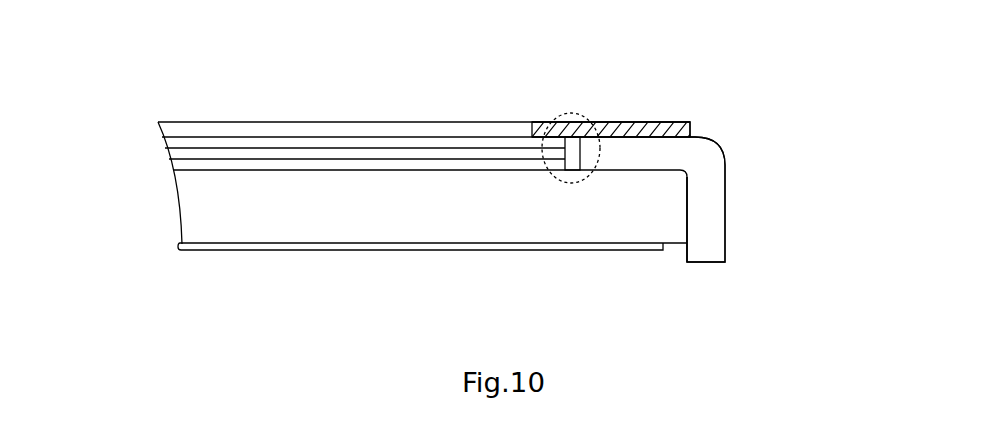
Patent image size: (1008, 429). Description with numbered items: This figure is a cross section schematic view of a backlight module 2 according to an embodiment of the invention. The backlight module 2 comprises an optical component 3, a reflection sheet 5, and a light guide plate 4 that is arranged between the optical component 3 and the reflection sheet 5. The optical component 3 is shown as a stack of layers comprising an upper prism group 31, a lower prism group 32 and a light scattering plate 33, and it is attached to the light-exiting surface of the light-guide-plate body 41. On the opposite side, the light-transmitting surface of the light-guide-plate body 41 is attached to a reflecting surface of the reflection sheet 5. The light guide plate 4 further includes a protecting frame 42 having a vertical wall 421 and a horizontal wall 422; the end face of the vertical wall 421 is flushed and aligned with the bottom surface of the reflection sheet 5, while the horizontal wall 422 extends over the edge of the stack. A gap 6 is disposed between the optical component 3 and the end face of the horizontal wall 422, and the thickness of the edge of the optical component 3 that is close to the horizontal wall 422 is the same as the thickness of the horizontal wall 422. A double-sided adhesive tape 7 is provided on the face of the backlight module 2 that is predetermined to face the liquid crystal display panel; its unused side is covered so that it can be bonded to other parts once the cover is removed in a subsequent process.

The backlight module 2 is at (446, 96).
The optical component 3 is at (80, 120).
The upper prism group 31 is at (158, 137).
The lower prism group 32 is at (165, 149).
The light scattering plate 33 is at (172, 168).
The light guide plate 4 is at (772, 66).
The light-guide-plate body 41 is at (655, 198).
The protecting frame 42 is at (702, 157).
The vertical wall 421 is at (723, 221).
The horizontal wall 422 is at (628, 135).
The reflection sheet 5 is at (182, 247).
The gap 6 is at (570, 120).
The double-sided adhesive tape 7 is at (672, 130).